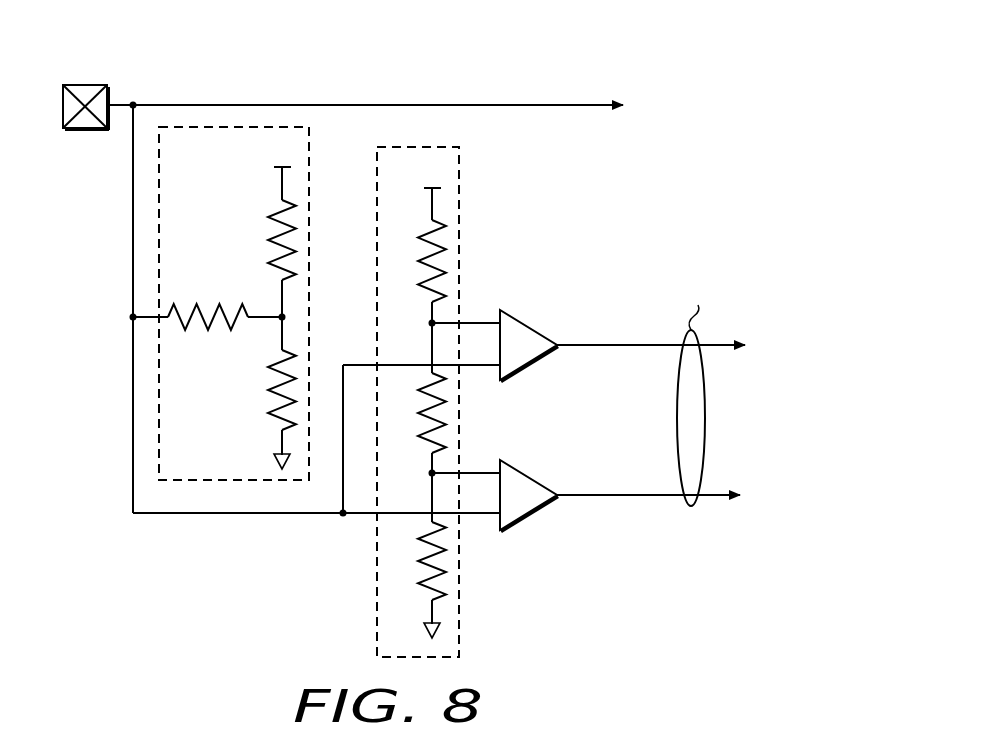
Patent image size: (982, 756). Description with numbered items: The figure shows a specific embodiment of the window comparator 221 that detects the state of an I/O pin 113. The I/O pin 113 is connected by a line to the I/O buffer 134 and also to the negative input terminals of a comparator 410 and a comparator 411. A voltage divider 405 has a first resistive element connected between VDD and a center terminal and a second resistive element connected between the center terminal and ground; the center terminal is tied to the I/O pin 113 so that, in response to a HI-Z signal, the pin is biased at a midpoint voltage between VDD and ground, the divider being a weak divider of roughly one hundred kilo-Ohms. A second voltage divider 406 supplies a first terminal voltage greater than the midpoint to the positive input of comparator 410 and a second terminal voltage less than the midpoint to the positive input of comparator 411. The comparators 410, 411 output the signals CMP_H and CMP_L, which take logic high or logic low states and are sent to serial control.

The window comparator 221 is at (634, 30).
The I/O pin 113 is at (92, 84).
The I/O buffer 134 is at (472, 108).
The voltage divider 405 is at (331, 150).
The voltage divider 406 is at (481, 159).
The comparator 410 is at (518, 318).
The comparator 411 is at (518, 468).